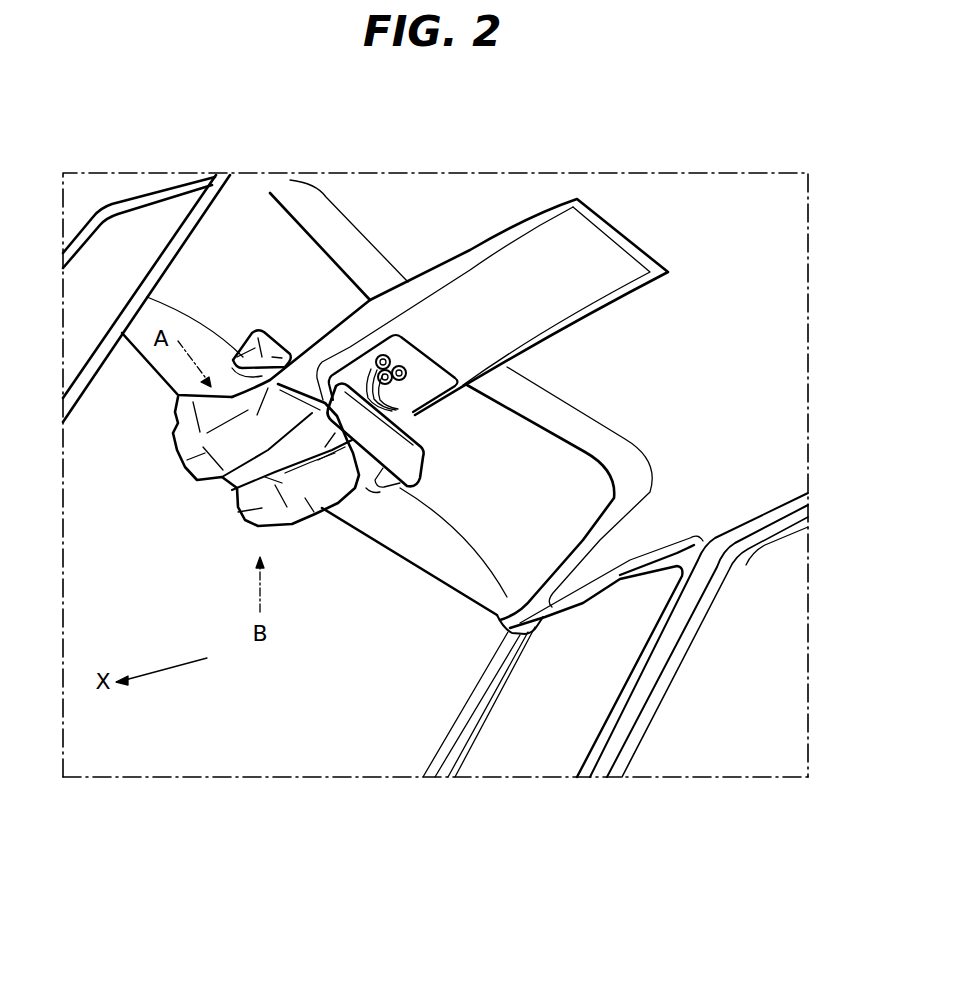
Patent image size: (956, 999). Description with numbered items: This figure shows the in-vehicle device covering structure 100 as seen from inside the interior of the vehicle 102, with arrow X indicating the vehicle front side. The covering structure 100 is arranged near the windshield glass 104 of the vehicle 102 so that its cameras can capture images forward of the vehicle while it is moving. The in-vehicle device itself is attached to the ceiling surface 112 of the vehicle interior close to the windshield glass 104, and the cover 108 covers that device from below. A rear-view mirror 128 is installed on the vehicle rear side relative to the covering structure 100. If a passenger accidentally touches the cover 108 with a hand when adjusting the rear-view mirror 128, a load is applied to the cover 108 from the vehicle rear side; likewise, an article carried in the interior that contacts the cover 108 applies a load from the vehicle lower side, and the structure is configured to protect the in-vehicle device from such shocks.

The in-vehicle device covering structure 100 is at (204, 505).
The vehicle 102 is at (524, 168).
The windshield glass 104 is at (283, 725).
The cover 108 is at (310, 505).
The ceiling surface 112 is at (305, 382).
The rear-view mirror 128 is at (412, 453).